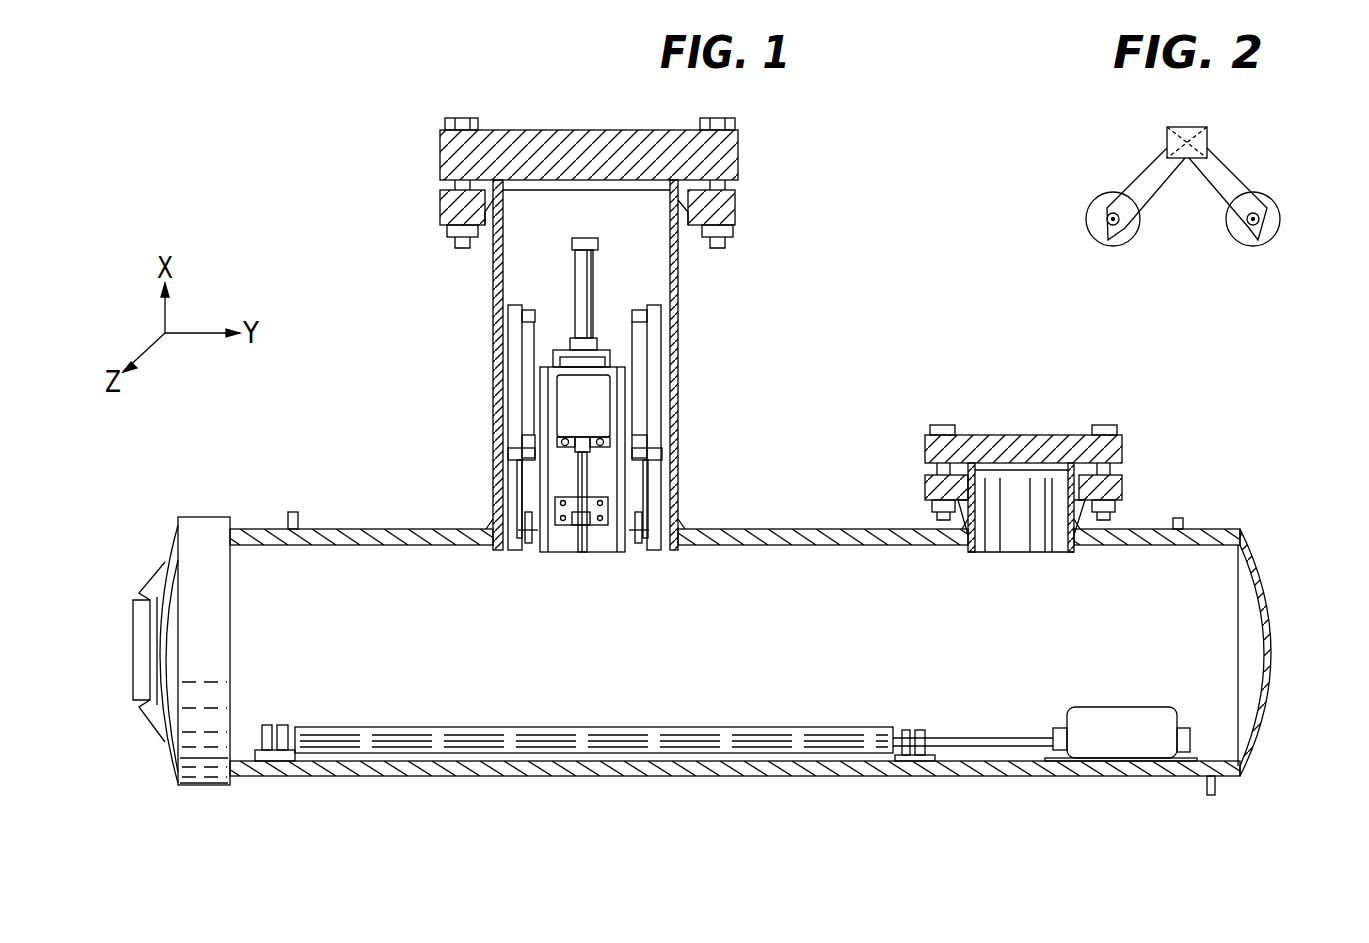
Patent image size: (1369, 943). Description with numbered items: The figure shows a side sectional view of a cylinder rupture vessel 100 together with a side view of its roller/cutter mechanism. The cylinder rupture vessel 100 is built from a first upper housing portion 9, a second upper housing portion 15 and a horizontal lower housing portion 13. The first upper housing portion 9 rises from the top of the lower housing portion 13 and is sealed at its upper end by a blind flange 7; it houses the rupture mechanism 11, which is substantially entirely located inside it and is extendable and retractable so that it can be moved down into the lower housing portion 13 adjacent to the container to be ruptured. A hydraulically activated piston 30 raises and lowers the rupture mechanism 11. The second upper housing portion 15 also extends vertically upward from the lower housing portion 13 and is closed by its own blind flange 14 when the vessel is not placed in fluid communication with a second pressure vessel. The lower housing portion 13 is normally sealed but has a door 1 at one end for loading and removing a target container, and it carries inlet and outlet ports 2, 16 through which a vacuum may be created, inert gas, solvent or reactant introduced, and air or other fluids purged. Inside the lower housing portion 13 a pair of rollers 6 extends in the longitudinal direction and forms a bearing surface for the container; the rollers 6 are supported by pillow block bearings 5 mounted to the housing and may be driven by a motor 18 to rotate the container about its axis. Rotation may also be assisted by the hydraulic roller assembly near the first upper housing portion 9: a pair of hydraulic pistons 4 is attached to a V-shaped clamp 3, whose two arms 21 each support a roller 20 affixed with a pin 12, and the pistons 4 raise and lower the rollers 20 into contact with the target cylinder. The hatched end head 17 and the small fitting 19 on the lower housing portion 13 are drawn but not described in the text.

In FIG. 1, the door 1 is at (185, 742).
In FIG. 1, the inlet and outlet port 2 is at (300, 512).
In FIG. 1, the V-shaped clamp 3 is at (518, 478).
In FIG. 2, the V-shaped clamp 3 is at (1225, 163).
In FIG. 1, the hydraulic piston 4 is at (520, 343).
In FIG. 1, the pillow block bearing 5 is at (280, 750).
In FIG. 1, the roller 6 is at (410, 735).
In FIG. 1, the blind flange 7 is at (655, 135).
In FIG. 1, the first upper housing portion 9 is at (678, 358).
In FIG. 1, the rupture mechanism 11 is at (600, 400).
In FIG. 1, the pin 12 is at (532, 550).
In FIG. 2, the pin 12 is at (1262, 215).
In FIG. 1, the lower housing portion 13 is at (805, 528).
In FIG. 1, the blind flange 14 is at (1055, 437).
In FIG. 1, the second upper housing portion 15 is at (1050, 513).
In FIG. 1, the inlet and outlet port 16 is at (1178, 518).
In FIG. 1, the end head 17 is at (1283, 635).
In FIG. 1, the motor 18 is at (1150, 720).
In FIG. 1, the drain 19 is at (1213, 795).
In FIG. 1, the roller 20 is at (526, 544).
In FIG. 2, the roller 20 is at (1236, 242).
In FIG. 2, the arm 21 is at (1135, 188).
In FIG. 1, the hydraulically activated piston 30 is at (596, 278).
In FIG. 1, the cylinder rupture vessel 100 is at (695, 783).